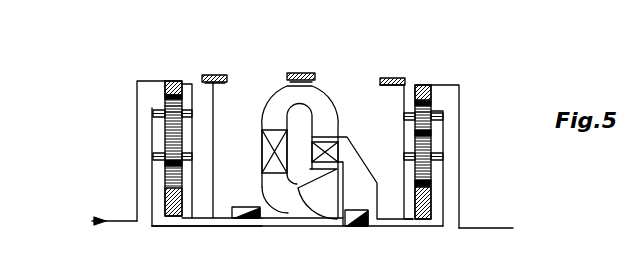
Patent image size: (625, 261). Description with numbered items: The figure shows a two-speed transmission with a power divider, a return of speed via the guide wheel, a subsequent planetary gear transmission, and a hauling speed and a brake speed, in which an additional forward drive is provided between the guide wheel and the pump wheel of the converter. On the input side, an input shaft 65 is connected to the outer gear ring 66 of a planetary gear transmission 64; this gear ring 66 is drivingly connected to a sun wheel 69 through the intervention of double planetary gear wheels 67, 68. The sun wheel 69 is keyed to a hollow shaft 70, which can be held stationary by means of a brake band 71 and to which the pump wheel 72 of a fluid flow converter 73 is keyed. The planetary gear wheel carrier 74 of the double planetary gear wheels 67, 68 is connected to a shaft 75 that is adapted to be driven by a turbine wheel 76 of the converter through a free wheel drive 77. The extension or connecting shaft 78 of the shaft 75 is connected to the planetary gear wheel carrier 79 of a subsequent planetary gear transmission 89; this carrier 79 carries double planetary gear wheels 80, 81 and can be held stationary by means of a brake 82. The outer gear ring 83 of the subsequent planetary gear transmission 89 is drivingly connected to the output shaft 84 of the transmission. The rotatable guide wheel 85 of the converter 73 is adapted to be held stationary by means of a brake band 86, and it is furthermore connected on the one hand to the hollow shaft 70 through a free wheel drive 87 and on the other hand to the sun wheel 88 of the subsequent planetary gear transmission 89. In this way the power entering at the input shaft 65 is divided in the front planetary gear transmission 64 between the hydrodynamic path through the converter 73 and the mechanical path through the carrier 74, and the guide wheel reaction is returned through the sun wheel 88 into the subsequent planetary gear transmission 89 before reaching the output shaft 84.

The planetary gear transmission 64 is at (190, 74).
The input shaft 65 is at (122, 226).
The outer gear ring 66 is at (173, 80).
The double planetary gear wheel 67 is at (178, 110).
The double planetary gear wheel 68 is at (165, 174).
The sun wheel 69 is at (180, 199).
The hollow shaft 70 is at (218, 215).
The brake band 71 is at (216, 75).
The pump wheel 72 is at (313, 186).
The fluid flow converter 73 is at (331, 85).
The planetary gear wheel carrier 74 is at (152, 140).
The shaft 75 is at (178, 226).
The turbine wheel 76 is at (314, 162).
The free wheel drive 77 is at (368, 227).
The connecting shaft 78 is at (415, 227).
The planetary gear wheel carrier 79 is at (445, 185).
The double planetary gear wheel 80 is at (432, 141).
The double planetary gear wheel 81 is at (432, 109).
The brake 82 is at (393, 78).
The outer gear ring 83 is at (432, 92).
The output shaft 84 is at (485, 228).
The rotatable guide wheel 85 is at (262, 138).
The brake band 86 is at (313, 73).
The free wheel drive 87 is at (249, 226).
The sun wheel 88 is at (432, 210).
The planetary gear transmission 89 is at (435, 80).